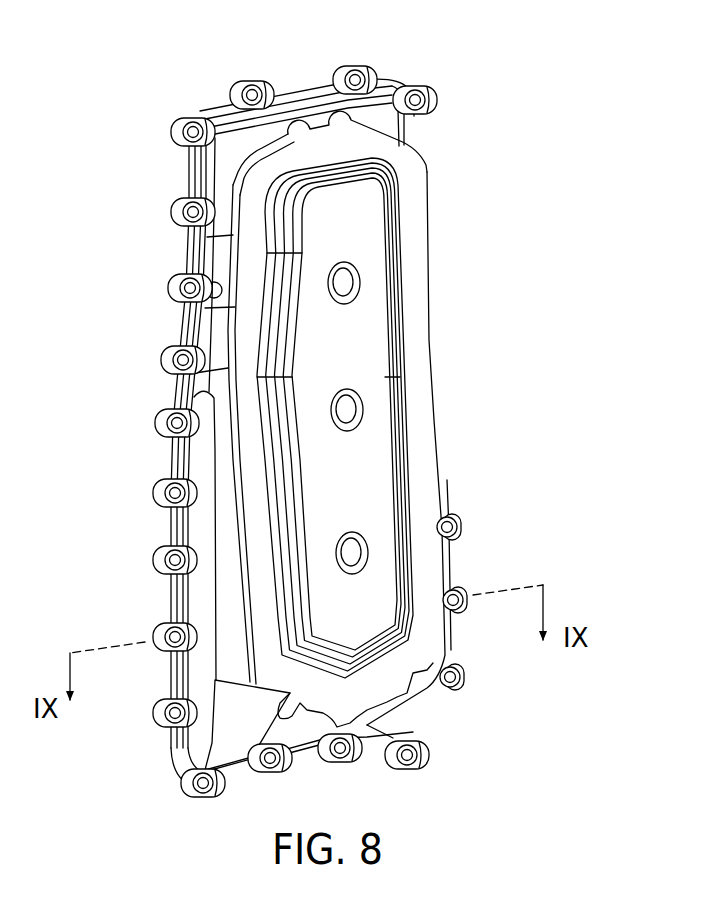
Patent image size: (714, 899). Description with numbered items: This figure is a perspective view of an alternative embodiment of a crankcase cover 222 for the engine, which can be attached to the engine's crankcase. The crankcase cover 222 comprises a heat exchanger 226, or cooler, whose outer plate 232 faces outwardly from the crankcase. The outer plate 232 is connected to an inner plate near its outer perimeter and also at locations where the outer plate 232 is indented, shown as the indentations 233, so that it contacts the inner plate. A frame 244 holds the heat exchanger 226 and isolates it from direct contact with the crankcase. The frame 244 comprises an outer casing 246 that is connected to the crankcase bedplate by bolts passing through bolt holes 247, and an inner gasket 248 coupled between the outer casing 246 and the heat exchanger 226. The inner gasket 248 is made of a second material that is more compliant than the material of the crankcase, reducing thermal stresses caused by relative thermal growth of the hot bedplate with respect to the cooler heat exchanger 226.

The crankcase cover 222 is at (548, 48).
The heat exchanger 226 is at (378, 481).
The outer plate 232 is at (365, 212).
The indentations 233 is at (347, 285).
The frame 244 is at (203, 602).
The outer casing 246 is at (218, 256).
The bolt holes 247 is at (360, 78).
The inner gasket 248 is at (418, 318).